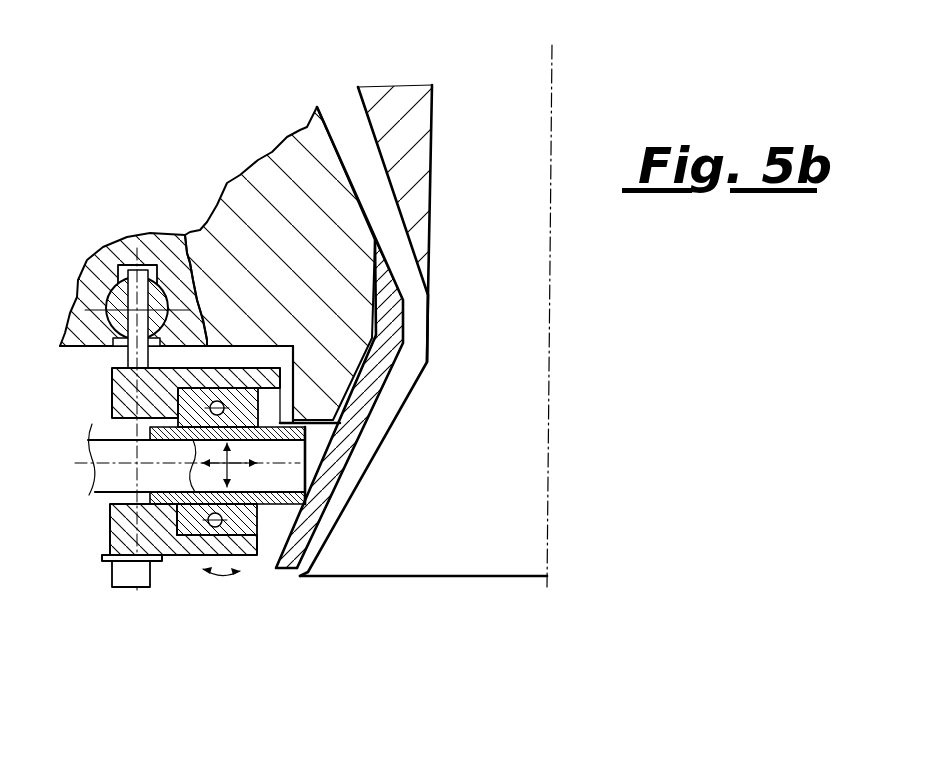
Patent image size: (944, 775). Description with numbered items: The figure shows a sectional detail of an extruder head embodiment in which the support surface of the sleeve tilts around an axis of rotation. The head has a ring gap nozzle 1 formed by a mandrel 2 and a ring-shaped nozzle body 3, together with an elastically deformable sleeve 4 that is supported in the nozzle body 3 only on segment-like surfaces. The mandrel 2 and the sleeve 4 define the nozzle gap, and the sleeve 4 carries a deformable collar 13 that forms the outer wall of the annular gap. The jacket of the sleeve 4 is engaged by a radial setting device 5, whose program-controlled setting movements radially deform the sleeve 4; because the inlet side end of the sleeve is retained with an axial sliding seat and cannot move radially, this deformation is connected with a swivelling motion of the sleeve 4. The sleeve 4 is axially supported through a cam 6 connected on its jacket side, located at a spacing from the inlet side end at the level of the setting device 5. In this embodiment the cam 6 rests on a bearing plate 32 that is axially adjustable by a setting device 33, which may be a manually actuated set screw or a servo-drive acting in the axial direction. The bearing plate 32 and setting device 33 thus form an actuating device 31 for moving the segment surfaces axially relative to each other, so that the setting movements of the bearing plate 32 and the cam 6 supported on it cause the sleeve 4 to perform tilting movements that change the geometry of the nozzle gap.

The ring gap nozzle 1 is at (202, 128).
The mandrel 2 is at (488, 491).
The nozzle body 3 is at (227, 253).
The elastically deformable sleeve 4 is at (408, 327).
The setting device 5 is at (112, 553).
The cam 6 is at (157, 505).
The deformable collar 13 is at (303, 533).
The actuating device 31 is at (105, 598).
The bearing plate 32 is at (125, 397).
The setting device 33 is at (120, 572).